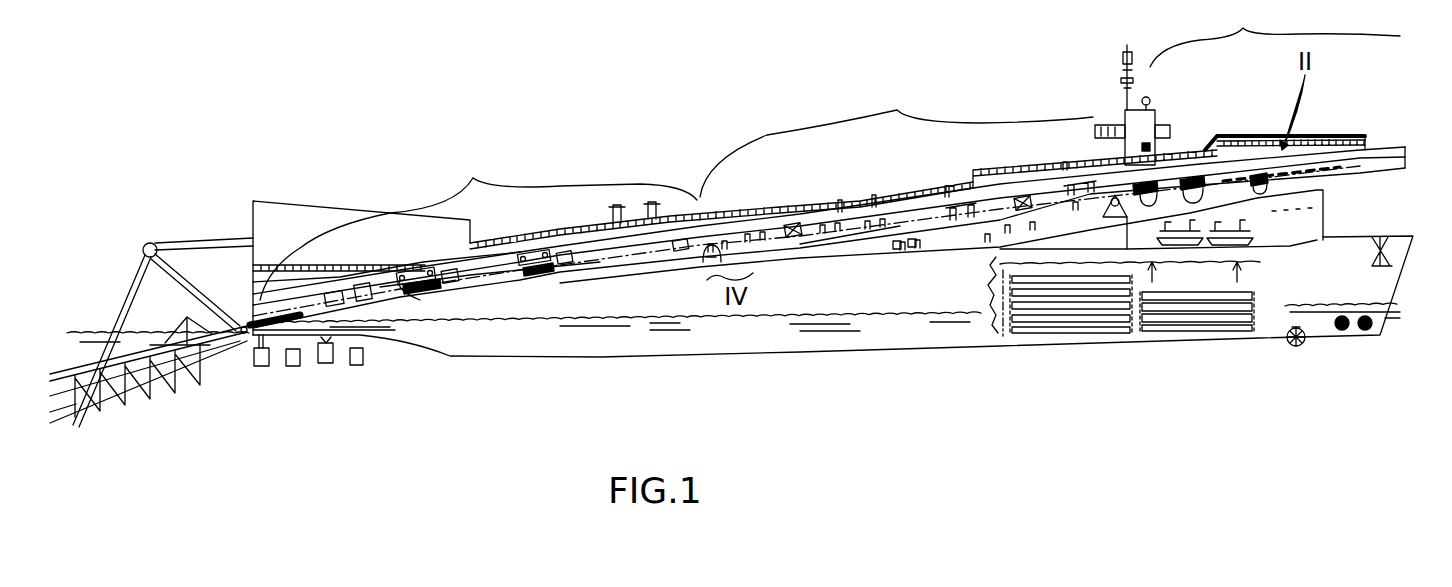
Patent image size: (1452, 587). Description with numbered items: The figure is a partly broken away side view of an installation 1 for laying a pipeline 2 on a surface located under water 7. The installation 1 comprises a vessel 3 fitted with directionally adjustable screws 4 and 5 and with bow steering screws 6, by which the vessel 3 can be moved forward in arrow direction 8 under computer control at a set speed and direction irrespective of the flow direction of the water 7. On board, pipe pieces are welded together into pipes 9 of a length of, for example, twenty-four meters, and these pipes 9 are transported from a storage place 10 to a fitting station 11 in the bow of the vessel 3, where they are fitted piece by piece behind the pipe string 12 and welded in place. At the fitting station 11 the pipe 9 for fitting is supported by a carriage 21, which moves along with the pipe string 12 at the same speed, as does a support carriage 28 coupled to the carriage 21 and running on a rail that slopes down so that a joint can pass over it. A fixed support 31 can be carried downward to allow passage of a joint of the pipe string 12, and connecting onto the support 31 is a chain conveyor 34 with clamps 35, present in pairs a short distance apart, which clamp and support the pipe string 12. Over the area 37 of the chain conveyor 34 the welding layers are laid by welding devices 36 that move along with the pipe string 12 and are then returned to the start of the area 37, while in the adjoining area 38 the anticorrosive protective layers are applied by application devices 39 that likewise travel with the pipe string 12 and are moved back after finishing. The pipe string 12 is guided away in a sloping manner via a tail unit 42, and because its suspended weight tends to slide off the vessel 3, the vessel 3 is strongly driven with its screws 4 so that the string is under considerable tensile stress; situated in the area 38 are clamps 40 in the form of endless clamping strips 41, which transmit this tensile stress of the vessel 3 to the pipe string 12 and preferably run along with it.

The installation 1 is at (487, 129).
The pipeline 2 is at (87, 400).
The vessel 3 is at (1337, 252).
The directionally adjustable screws 4 is at (260, 368).
The directionally adjustable screw 5 is at (1295, 347).
The bow steering screws 6 is at (1365, 331).
The water 7 is at (1397, 307).
The arrow direction 8 is at (1335, 264).
The pipes 9 is at (1093, 328).
The storage place 10 is at (1195, 280).
The fitting station 11 is at (1275, 33).
The pipe string 12 is at (891, 206).
The carriage 21 is at (1257, 193).
The support carriage 28 is at (1191, 205).
The fixed support 31 is at (1143, 204).
The chain conveyor 34 is at (822, 238).
The clamps 35 is at (970, 206).
The welding devices 36 is at (793, 225).
The area 37 is at (896, 137).
The area 38 is at (478, 223).
The application devices 39 is at (334, 298).
The clamps 40 is at (543, 277).
The endless clamping strips 41 is at (397, 282).
The tail unit 42 is at (165, 376).